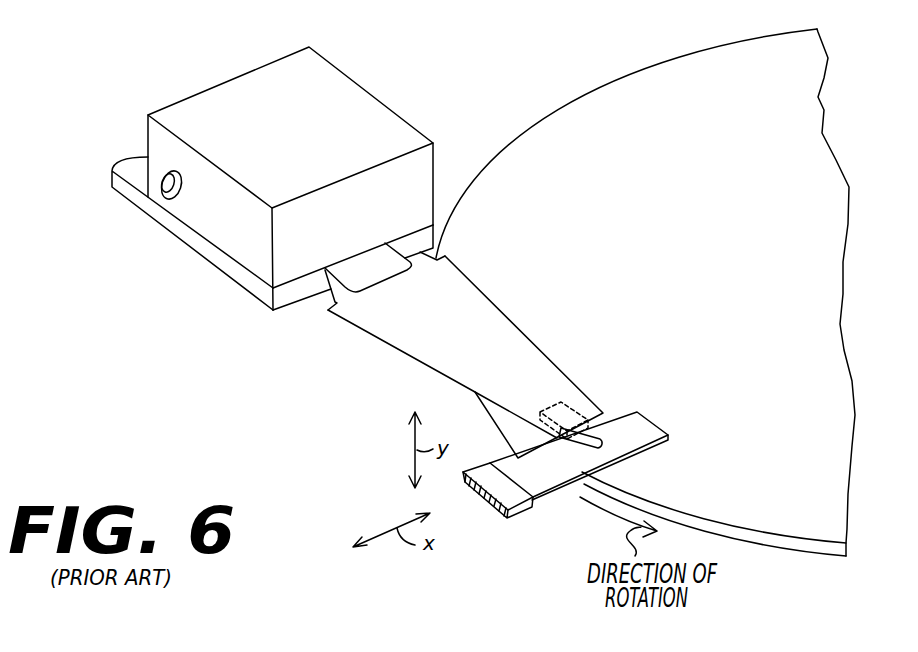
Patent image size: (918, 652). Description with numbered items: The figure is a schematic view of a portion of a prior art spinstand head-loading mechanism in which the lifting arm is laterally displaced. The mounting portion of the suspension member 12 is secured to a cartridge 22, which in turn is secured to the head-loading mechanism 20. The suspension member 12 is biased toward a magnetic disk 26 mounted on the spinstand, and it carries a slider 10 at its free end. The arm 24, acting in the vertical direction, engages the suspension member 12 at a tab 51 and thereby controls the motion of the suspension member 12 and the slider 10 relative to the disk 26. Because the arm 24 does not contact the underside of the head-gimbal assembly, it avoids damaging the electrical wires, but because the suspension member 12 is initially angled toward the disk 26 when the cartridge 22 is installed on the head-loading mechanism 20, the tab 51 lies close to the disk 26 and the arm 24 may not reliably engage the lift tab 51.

The slider 10 is at (570, 408).
The suspension member 12 is at (470, 317).
The head-loading mechanism 20 is at (150, 210).
The cartridge 22 is at (227, 227).
The arm 24 is at (648, 433).
The magnetic disk 26 is at (580, 140).
The tab 51 is at (606, 432).